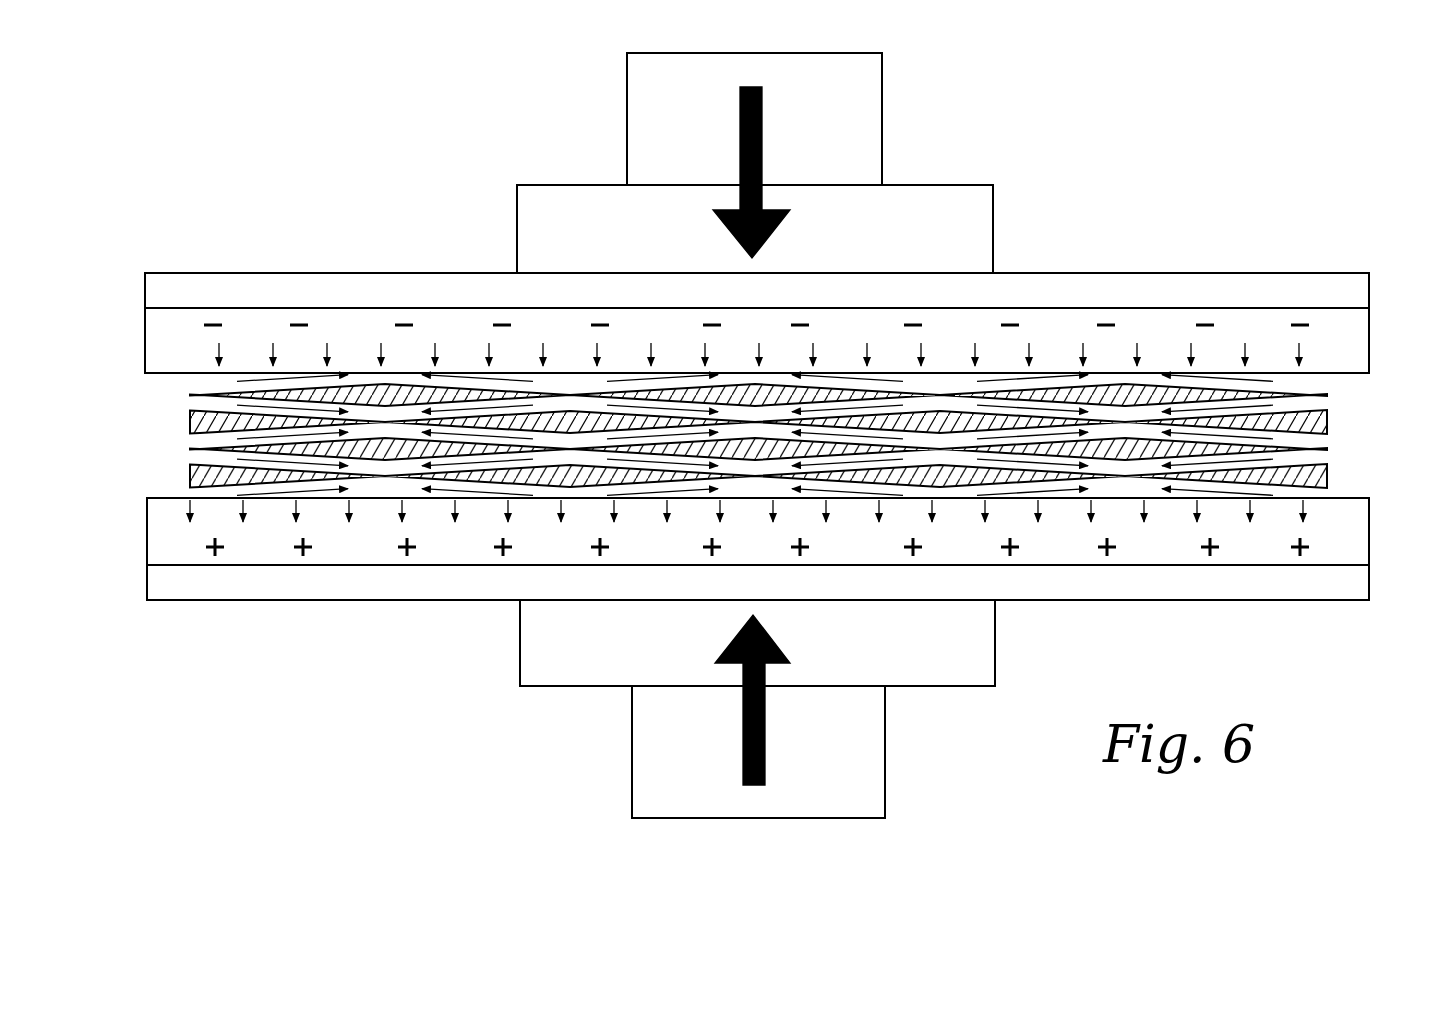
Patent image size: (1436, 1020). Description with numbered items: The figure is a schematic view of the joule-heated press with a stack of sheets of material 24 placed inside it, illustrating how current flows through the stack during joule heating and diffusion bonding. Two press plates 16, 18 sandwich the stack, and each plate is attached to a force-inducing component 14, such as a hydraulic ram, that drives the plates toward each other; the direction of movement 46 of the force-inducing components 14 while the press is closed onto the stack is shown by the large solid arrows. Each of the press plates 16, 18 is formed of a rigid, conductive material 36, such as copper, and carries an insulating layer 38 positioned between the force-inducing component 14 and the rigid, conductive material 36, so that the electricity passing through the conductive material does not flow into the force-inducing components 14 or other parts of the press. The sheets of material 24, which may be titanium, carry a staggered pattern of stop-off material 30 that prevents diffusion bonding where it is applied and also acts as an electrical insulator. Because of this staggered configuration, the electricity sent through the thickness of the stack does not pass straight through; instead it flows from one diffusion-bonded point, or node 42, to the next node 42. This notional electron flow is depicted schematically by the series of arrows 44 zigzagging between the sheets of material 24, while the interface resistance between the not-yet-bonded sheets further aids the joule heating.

The force-inducing component 14 is at (638, 125).
The press plate 16 is at (307, 587).
The press plate 18 is at (330, 290).
The sheets of material 24 is at (1323, 403).
The stop-off material 30 is at (1320, 478).
The rigid, conductive material 36 is at (1355, 345).
The insulating layer 38 is at (1057, 285).
The node 42 is at (947, 398).
The arrows 44 is at (698, 357).
The direction of movement 46 is at (765, 146).